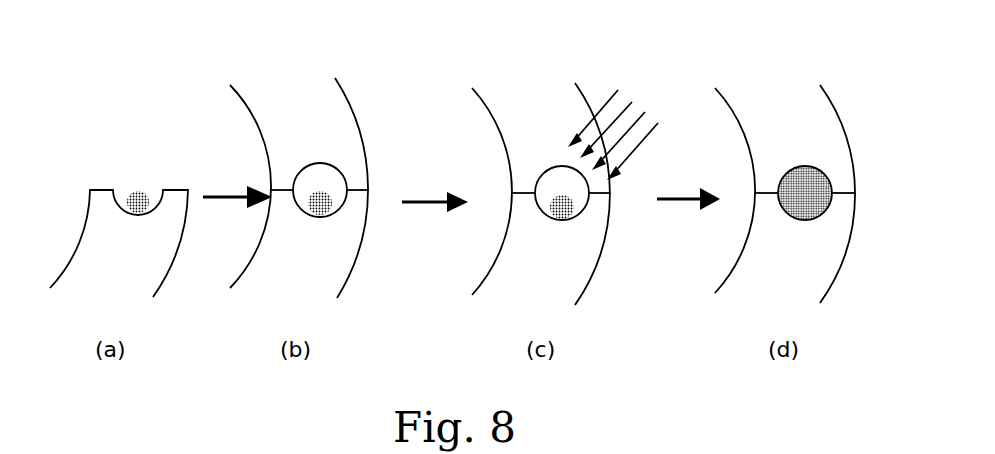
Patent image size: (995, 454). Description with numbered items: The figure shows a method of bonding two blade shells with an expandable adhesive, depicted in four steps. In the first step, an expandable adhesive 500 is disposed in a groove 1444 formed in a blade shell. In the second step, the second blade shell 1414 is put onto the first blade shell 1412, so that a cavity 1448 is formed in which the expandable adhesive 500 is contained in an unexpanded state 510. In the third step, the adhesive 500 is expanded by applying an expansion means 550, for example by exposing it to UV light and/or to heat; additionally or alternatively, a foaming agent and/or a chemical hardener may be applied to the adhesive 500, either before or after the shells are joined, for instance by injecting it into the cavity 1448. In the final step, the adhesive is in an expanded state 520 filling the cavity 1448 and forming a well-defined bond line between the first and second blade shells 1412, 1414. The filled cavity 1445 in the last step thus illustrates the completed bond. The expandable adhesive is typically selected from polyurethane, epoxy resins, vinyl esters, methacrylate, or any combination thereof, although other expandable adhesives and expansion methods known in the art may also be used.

The expandable adhesive 500 is at (135, 190).
The groove 1444 is at (130, 218).
The cavity 1448 is at (316, 168).
The unexpanded state 510 is at (320, 208).
The expansion means 550 is at (623, 100).
The first blade shell 1412 is at (735, 264).
The second blade shell 1414 is at (825, 90).
The filled spherical cavity 1445 is at (803, 166).
The expanded state 520 is at (800, 207).